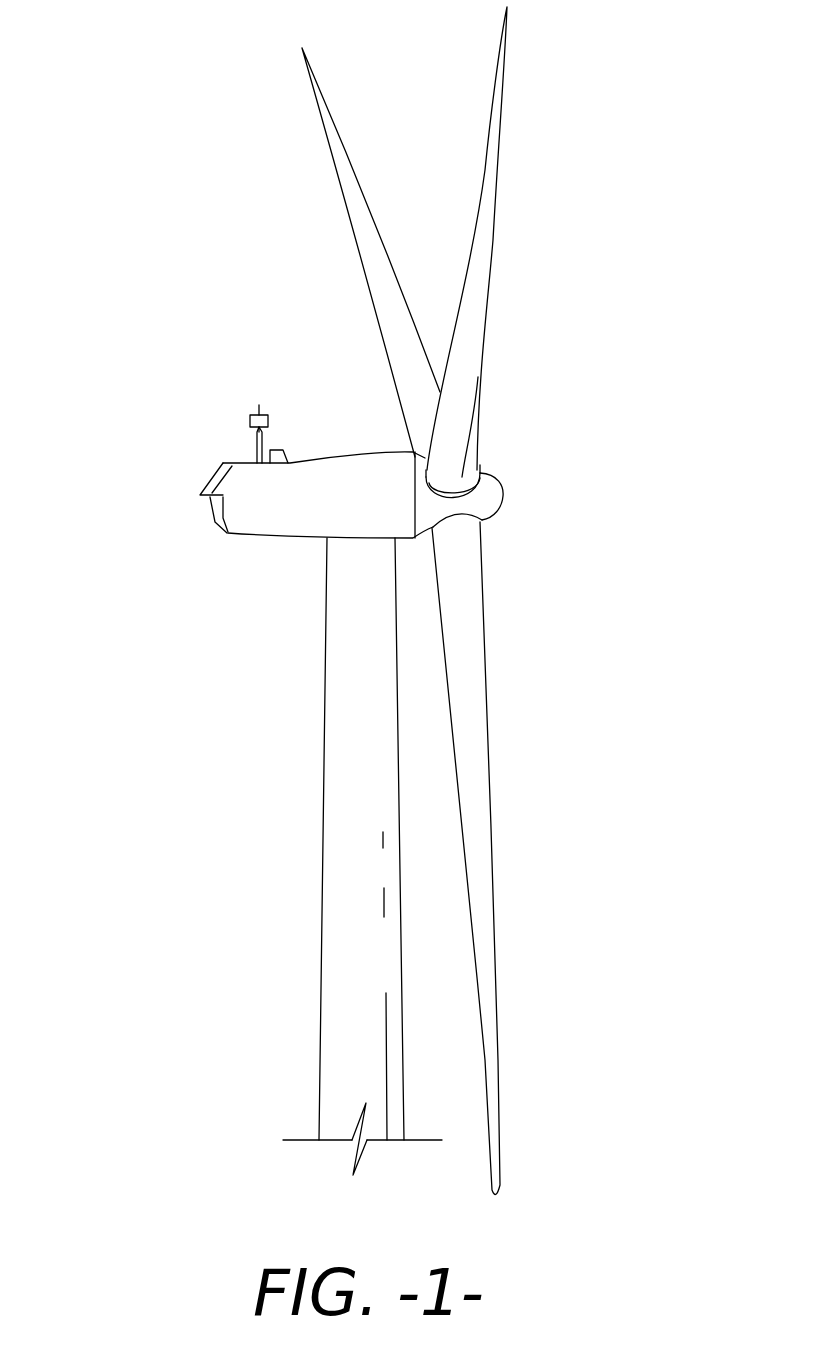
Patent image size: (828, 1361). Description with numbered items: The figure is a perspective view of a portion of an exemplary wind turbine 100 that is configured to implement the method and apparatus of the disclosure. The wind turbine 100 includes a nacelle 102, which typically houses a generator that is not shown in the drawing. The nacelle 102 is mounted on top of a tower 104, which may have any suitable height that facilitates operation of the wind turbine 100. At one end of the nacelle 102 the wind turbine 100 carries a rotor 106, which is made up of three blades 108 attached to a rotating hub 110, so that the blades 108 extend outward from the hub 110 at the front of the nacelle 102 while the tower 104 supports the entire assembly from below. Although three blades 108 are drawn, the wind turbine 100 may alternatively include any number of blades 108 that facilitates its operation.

The wind turbine 100 is at (378, 600).
The nacelle 102 is at (299, 502).
The tower 104 is at (344, 856).
The rotor 106 is at (489, 600).
The blades 108 is at (443, 600).
The rotating hub 110 is at (500, 470).